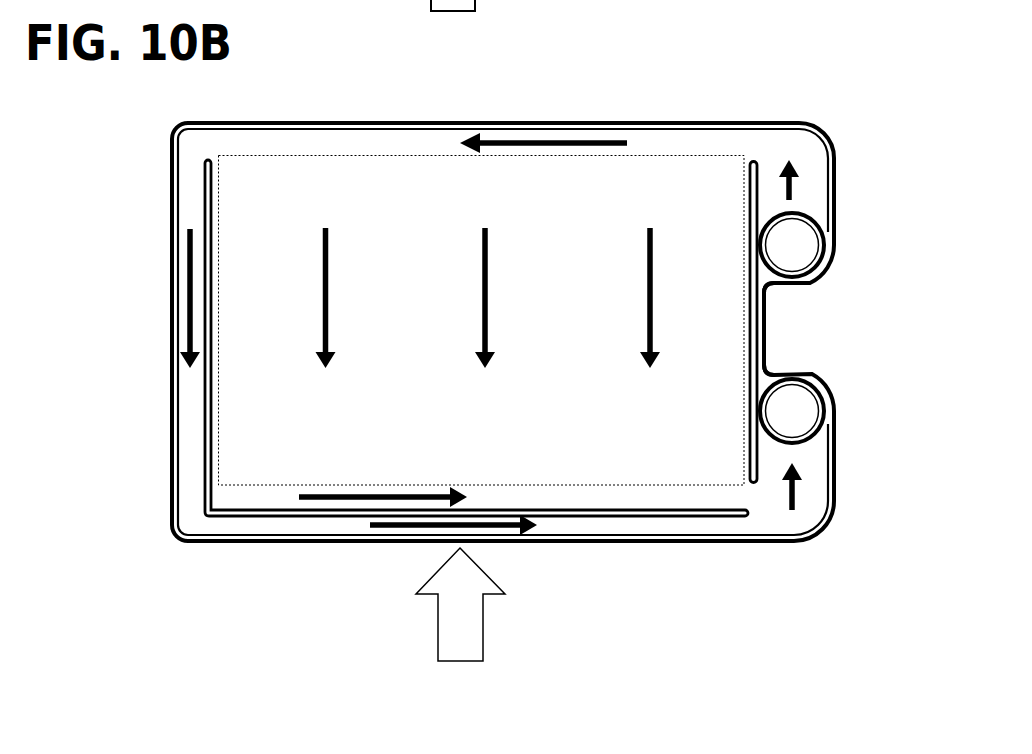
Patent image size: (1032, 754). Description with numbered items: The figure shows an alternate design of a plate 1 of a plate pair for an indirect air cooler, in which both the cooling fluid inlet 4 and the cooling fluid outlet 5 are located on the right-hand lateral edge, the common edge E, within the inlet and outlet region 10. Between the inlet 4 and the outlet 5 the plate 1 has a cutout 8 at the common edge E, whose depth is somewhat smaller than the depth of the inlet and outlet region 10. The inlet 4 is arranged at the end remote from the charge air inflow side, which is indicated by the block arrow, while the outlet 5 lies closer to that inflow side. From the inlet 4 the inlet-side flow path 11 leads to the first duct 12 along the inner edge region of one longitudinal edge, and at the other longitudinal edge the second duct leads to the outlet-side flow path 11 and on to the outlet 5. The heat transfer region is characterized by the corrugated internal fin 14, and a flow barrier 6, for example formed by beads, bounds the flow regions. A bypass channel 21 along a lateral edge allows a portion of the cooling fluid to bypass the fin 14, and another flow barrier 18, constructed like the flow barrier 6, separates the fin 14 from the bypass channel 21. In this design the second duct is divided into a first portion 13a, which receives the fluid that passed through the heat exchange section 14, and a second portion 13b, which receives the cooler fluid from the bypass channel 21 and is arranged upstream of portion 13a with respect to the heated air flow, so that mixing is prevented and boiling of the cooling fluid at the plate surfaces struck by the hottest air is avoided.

The plate 1 is at (529, 100).
The inlet 4 is at (790, 242).
The outlet 5 is at (793, 413).
The flow barrier 6 is at (752, 180).
The cutout 8 is at (787, 331).
The inlet and outlet region 10 is at (823, 113).
The flow path 11 is at (810, 185).
The first duct 12 is at (363, 138).
The first portion of the second duct 13a is at (615, 500).
The second portion of the second duct 13b is at (585, 528).
The corrugated internal fin 14 is at (640, 475).
The flow barrier 18 is at (207, 185).
The bypass channel 21 is at (190, 432).
The common edge E is at (837, 473).